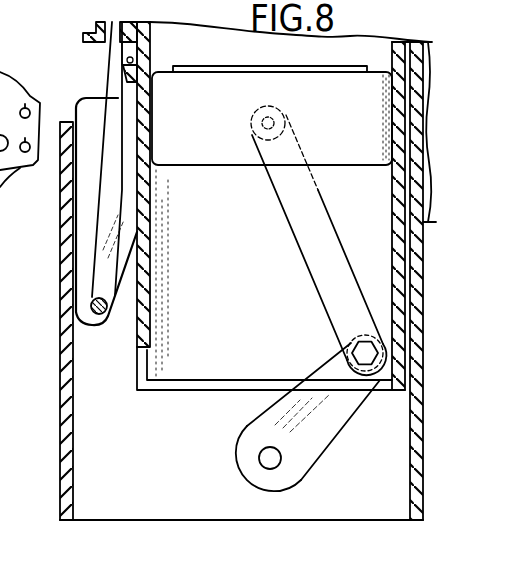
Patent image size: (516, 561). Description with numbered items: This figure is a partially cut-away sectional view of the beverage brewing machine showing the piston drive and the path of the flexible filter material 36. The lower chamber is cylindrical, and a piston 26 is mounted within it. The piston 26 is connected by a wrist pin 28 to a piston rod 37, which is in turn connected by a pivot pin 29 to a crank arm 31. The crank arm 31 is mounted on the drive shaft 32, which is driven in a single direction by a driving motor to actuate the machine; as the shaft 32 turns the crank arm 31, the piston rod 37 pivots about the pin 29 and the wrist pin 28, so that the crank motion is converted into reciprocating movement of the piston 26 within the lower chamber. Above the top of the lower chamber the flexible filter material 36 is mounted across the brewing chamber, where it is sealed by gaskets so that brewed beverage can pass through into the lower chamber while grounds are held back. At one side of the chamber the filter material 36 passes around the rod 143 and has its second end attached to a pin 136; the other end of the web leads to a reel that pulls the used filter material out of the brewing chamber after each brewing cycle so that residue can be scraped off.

The piston 26 is at (357, 85).
The wrist pin 28 is at (275, 124).
The pivot pin 29 is at (360, 349).
The crank arm 31 is at (349, 406).
The drive shaft 32 is at (281, 459).
The filter material 36 is at (124, 137).
The piston rod 37 is at (342, 252).
The pin 136 is at (138, 63).
The rod 143 is at (92, 305).